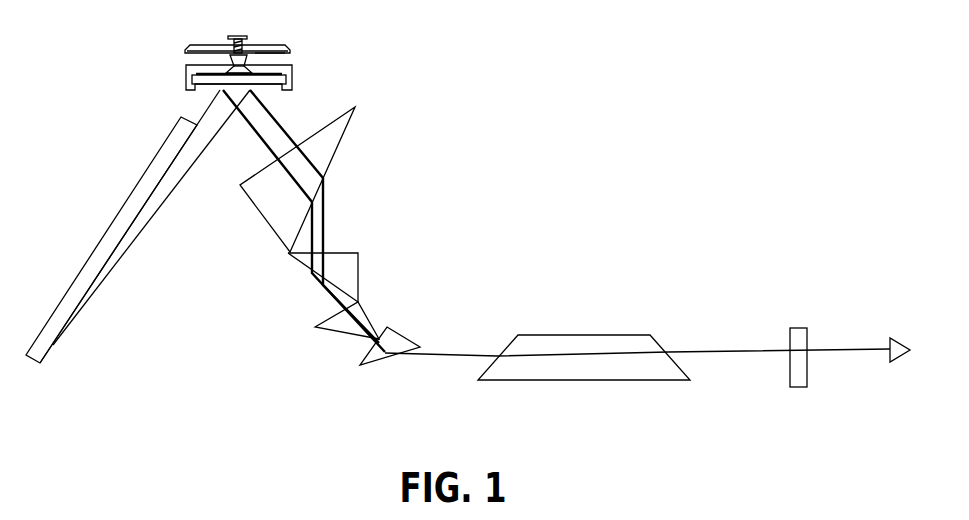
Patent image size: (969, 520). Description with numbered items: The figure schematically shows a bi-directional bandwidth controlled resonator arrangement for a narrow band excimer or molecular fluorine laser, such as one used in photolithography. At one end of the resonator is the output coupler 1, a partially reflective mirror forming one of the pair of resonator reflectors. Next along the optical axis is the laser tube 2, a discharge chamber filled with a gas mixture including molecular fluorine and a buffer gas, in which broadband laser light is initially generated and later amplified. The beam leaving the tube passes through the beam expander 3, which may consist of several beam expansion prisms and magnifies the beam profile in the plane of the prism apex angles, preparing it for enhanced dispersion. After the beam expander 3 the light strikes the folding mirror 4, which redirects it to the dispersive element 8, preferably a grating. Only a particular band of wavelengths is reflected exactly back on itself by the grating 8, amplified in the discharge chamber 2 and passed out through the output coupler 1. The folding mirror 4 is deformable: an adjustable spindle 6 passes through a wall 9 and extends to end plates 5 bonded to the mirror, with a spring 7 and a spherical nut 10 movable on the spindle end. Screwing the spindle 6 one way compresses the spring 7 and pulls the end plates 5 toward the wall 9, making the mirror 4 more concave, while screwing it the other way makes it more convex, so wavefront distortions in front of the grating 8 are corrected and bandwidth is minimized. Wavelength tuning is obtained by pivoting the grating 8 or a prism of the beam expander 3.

The output coupler 1 is at (798, 344).
The laser tube 2 is at (584, 344).
The beam expander 3 is at (330, 236).
The folding mirror 4 is at (277, 88).
The end plates 5 is at (292, 69).
The adjustable spindle 6 is at (240, 34).
The spring 7 is at (228, 57).
The dispersive element 8 is at (111, 240).
The wall 9 is at (193, 47).
The spherical nut 10 is at (262, 50).